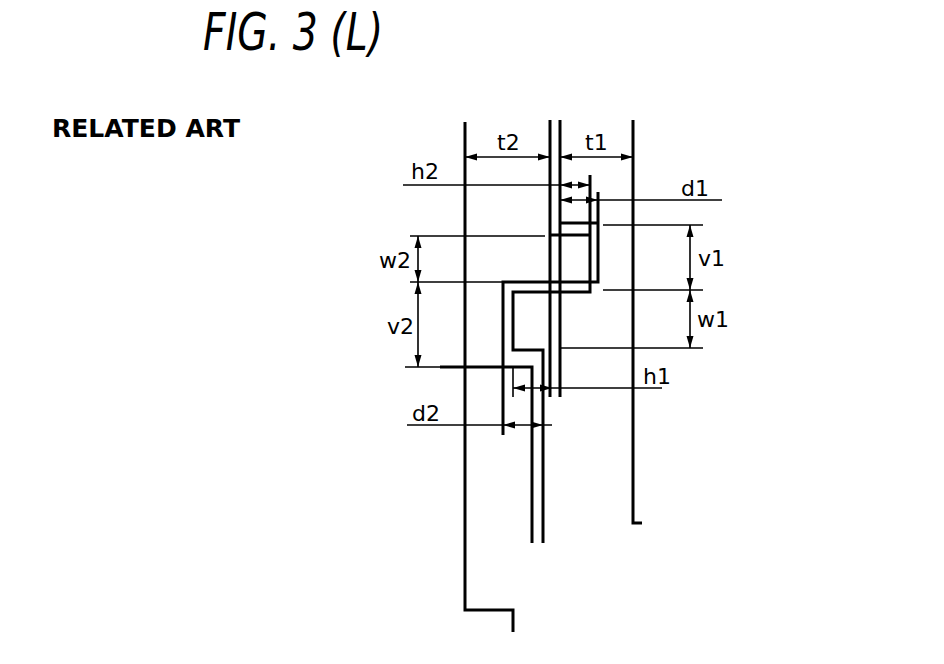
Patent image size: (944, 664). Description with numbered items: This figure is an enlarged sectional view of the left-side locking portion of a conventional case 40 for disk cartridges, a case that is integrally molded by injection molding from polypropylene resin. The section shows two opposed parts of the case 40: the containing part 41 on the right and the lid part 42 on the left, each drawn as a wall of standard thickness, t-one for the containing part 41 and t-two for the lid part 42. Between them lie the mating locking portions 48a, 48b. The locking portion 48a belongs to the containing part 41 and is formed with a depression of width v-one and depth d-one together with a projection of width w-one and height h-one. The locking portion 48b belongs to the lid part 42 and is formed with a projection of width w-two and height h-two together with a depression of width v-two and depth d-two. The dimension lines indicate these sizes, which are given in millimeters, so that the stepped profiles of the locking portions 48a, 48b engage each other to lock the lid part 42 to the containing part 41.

The case 40 is at (756, 151).
The containing part 41 is at (644, 139).
The lid part 42 is at (463, 138).
The locking portion 48a is at (734, 283).
The locking portion 48b is at (377, 280).